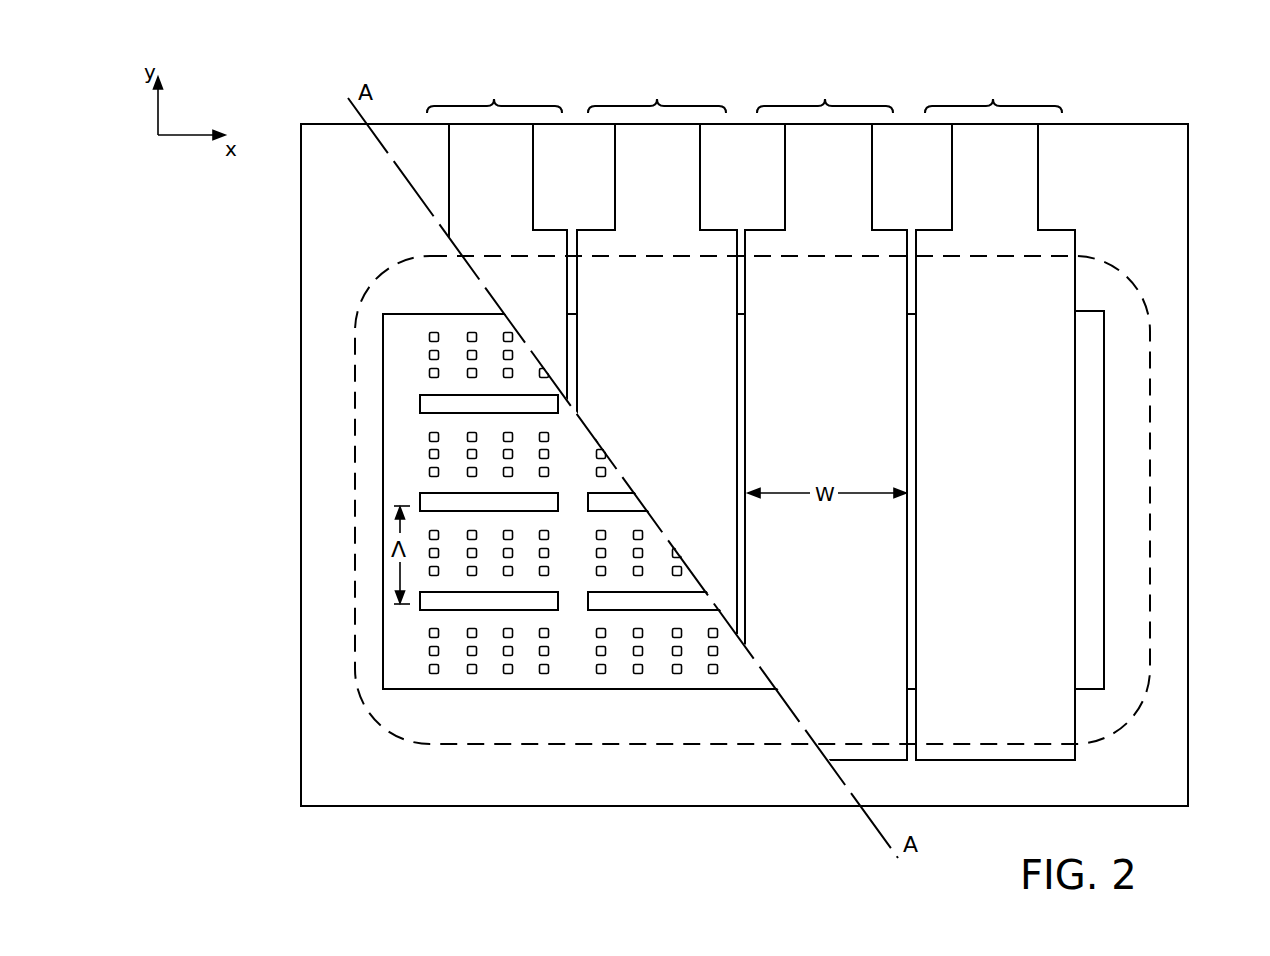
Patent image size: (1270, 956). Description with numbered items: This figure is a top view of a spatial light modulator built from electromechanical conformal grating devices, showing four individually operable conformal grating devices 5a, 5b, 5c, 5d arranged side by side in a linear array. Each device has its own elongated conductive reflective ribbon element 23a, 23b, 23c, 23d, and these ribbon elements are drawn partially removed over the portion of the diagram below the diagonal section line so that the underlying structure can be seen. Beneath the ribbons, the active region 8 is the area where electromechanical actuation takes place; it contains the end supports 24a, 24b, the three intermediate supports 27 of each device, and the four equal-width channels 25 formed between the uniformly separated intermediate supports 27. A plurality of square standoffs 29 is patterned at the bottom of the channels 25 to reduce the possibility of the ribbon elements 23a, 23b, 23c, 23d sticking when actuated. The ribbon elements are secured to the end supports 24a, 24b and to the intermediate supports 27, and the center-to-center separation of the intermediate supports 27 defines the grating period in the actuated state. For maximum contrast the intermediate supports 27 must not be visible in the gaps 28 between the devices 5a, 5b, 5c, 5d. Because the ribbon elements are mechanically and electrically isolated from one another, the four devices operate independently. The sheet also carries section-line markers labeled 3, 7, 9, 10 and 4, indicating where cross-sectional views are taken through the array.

The section line for FIG. 3 is at (595, 215).
The section line for FIG. 7 is at (595, 680).
The section line for FIG. 9 is at (595, 43).
The section line for FIG. 10 is at (595, 893).
The section line for FIG. 4 is at (320, 633).
The conformal grating device 5a is at (494, 92).
The conformal grating device 5b is at (657, 92).
The conformal grating device 5c is at (825, 92).
The conformal grating device 5d is at (993, 92).
The active region 8 is at (382, 728).
The conductive reflective ribbon element 23a is at (506, 194).
The conductive reflective ribbon element 23b is at (675, 194).
The conductive reflective ribbon element 23c is at (845, 194).
The conductive reflective ribbon element 23d is at (1013, 194).
The end support 24a is at (1091, 291).
The end support 24b is at (1091, 707).
The channel 25 is at (400, 356).
The intermediate support 27 is at (427, 404).
The gap 28 is at (747, 327).
The standoff 29 is at (472, 674).